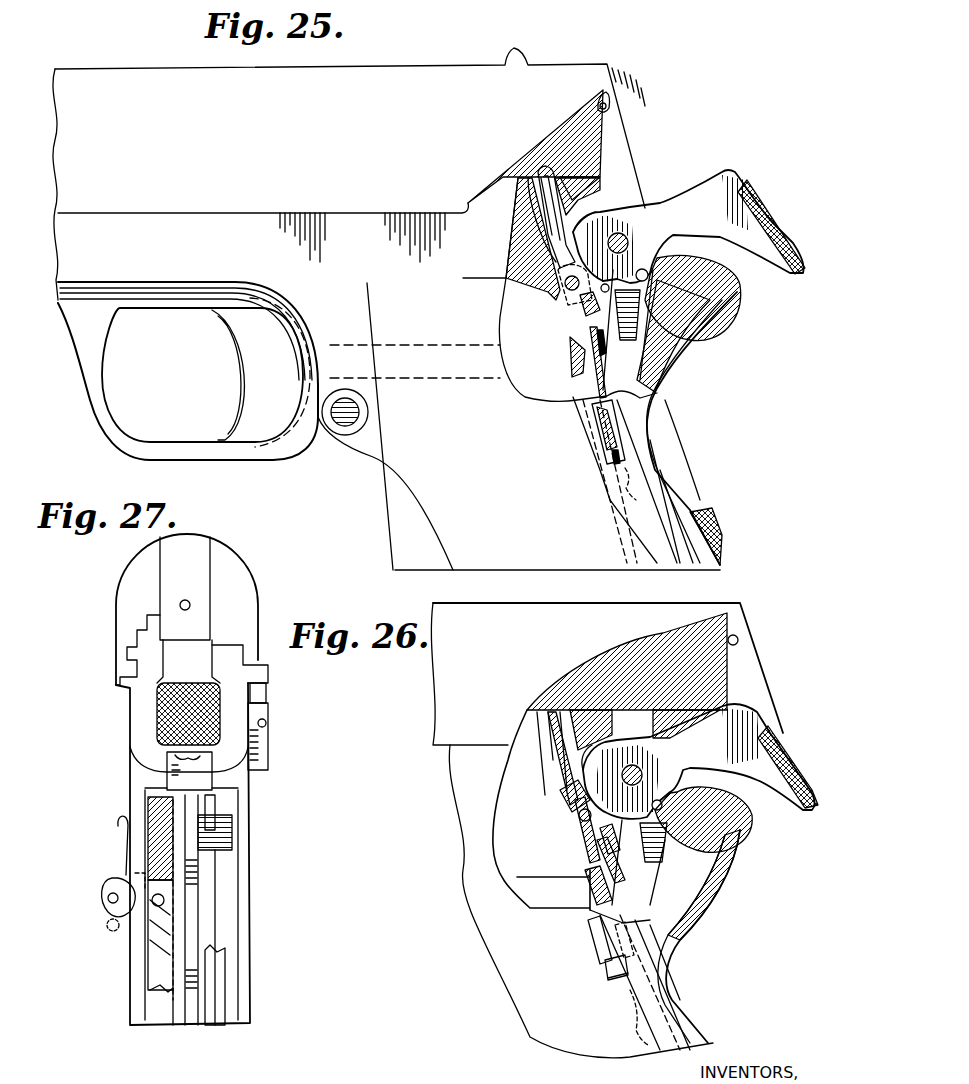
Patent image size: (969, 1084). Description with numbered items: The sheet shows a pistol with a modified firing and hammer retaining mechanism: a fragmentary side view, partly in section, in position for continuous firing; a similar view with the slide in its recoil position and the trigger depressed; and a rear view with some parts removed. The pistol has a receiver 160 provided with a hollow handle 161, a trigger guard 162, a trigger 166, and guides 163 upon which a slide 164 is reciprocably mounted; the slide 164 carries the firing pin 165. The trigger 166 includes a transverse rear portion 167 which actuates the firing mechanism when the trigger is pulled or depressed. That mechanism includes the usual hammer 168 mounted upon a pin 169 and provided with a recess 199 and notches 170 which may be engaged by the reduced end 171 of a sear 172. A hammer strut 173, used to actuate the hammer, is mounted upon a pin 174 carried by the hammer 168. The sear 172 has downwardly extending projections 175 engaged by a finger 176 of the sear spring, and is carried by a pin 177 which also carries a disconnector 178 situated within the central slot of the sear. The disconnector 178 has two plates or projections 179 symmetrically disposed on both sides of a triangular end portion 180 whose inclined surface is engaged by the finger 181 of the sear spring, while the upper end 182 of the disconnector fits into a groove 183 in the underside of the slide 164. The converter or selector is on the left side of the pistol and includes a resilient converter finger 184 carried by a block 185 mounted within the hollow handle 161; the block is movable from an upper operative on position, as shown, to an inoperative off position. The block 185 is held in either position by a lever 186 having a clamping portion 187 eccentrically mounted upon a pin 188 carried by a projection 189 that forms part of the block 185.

In FIG. 25, the receiver 160 is at (200, 265).
In FIG. 27, the receiver 160 is at (133, 740).
In FIG. 26, the receiver 160 is at (470, 780).
In FIG. 25, the hollow handle 161 is at (430, 452).
In FIG. 27, the hollow handle 161 is at (245, 973).
In FIG. 25, the trigger guard 162 is at (143, 450).
In FIG. 27, the guides 163 is at (125, 665).
In FIG. 25, the slide 164 is at (598, 145).
In FIG. 27, the slide 164 is at (133, 618).
In FIG. 26, the slide 164 is at (700, 685).
In FIG. 25, the firing pin 165 is at (608, 107).
In FIG. 27, the firing pin 165 is at (190, 605).
In FIG. 26, the firing pin 165 is at (738, 640).
In FIG. 25, the trigger 166 is at (255, 377).
In FIG. 26, the trigger 166 is at (540, 880).
In FIG. 25, the transverse rear portion 167 is at (573, 370).
In FIG. 27, the transverse rear portion 167 is at (225, 840).
In FIG. 26, the transverse rear portion 167 is at (590, 882).
In FIG. 25, the hammer 168 is at (690, 195).
In FIG. 27, the hammer 168 is at (210, 722).
In FIG. 26, the hammer 168 is at (745, 760).
In FIG. 25, the pin 169 is at (622, 238).
In FIG. 26, the pin 169 is at (634, 768).
In FIG. 25, the notches 170 is at (572, 217).
In FIG. 26, the notches 170 is at (585, 740).
In FIG. 25, the reduced end 171 is at (548, 240).
In FIG. 26, the reduced end 171 is at (565, 797).
In FIG. 25, the sear 172 is at (585, 316).
In FIG. 26, the sear 172 is at (595, 826).
In FIG. 25, the hammer strut 173 is at (627, 364).
In FIG. 26, the hammer strut 173 is at (650, 918).
In FIG. 25, the pin 174 is at (646, 273).
In FIG. 26, the pin 174 is at (662, 803).
In FIG. 25, the downwardly extending projections 175 is at (572, 340).
In FIG. 26, the downwardly extending projections 175 is at (655, 860).
In FIG. 25, the finger of the sear spring 176 is at (640, 385).
In FIG. 26, the finger of the sear spring 176 is at (665, 930).
In FIG. 25, the pin 177 is at (566, 300).
In FIG. 25, the disconnector 178 is at (552, 247).
In FIG. 26, the disconnector 178 is at (560, 772).
In FIG. 25, the plates or projections 179 is at (570, 353).
In FIG. 27, the plates or projections 179 is at (215, 815).
In FIG. 26, the plates or projections 179 is at (595, 890).
In FIG. 26, the triangular end portion 180 is at (620, 872).
In FIG. 25, the finger of the sear spring 181 is at (593, 348).
In FIG. 27, the finger of the sear spring 181 is at (195, 920).
In FIG. 26, the finger of the sear spring 181 is at (640, 905).
In FIG. 25, the upper end 182 is at (538, 183).
In FIG. 26, the upper end 182 is at (555, 730).
In FIG. 25, the groove 183 is at (563, 135).
In FIG. 25, the resilient converter finger 184 is at (583, 400).
In FIG. 27, the resilient converter finger 184 is at (155, 807).
In FIG. 26, the resilient converter finger 184 is at (610, 855).
In FIG. 25, the block 185 is at (603, 440).
In FIG. 27, the block 185 is at (170, 887).
In FIG. 27, the lever 186 is at (118, 845).
In FIG. 27, the clamping portion 187 is at (118, 933).
In FIG. 26, the clamping portion 187 is at (612, 975).
In FIG. 27, the pin 188 is at (110, 902).
In FIG. 26, the pin 188 is at (605, 965).
In FIG. 27, the projection 189 is at (115, 875).
In FIG. 25, the recess 199 is at (680, 316).
In FIG. 26, the recess 199 is at (672, 840).